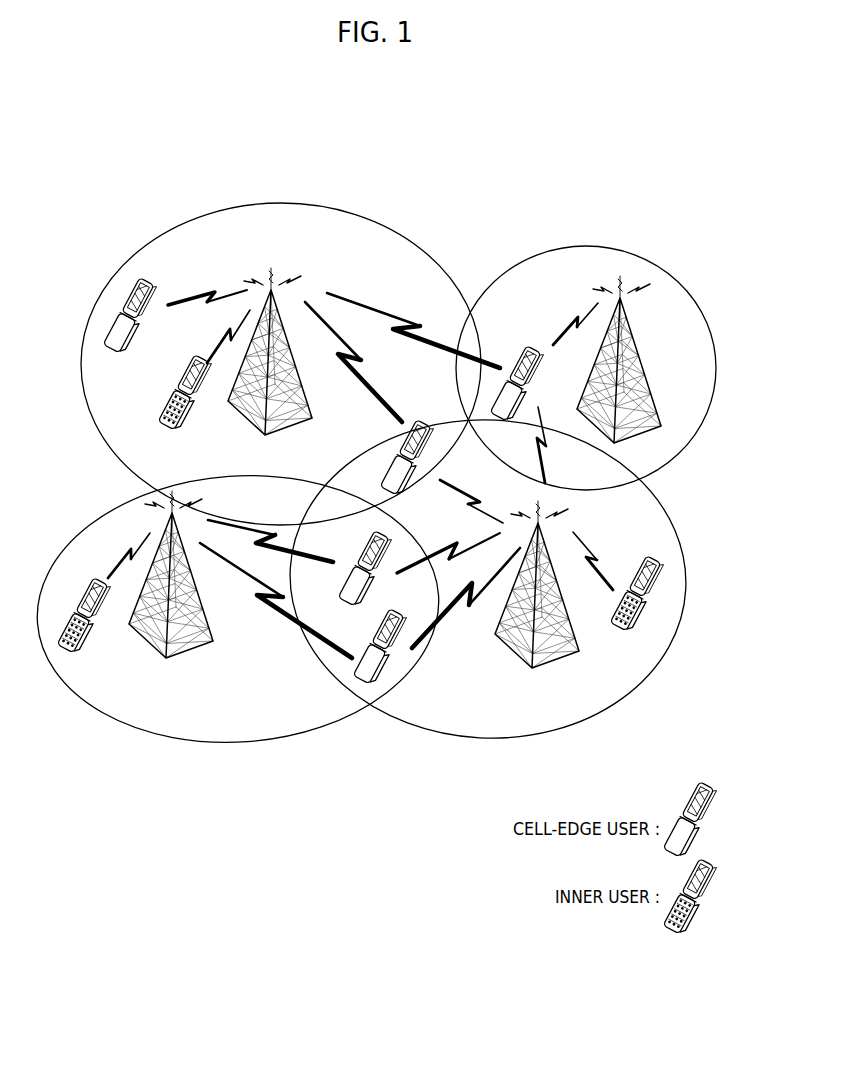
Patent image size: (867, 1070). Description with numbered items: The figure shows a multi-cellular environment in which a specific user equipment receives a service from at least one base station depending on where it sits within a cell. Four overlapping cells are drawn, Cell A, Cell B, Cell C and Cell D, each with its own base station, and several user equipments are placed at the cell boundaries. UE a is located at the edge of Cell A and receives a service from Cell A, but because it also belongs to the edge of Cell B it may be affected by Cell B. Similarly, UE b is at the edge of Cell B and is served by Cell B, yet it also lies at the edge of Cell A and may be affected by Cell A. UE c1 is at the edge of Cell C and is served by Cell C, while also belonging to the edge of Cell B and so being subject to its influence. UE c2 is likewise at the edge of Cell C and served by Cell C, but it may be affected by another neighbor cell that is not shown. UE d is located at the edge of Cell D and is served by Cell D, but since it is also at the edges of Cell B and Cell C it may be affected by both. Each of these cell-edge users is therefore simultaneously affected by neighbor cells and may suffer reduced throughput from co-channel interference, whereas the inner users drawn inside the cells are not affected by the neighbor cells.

The Cell A is at (171, 591).
The Cell B is at (537, 600).
The Cell C is at (270, 366).
The Cell D is at (619, 369).
The element UE a is at (361, 647).
The element UE b is at (349, 573).
The element UE c1 is at (380, 457).
The element UE c2 is at (125, 328).
The element UE d is at (517, 370).